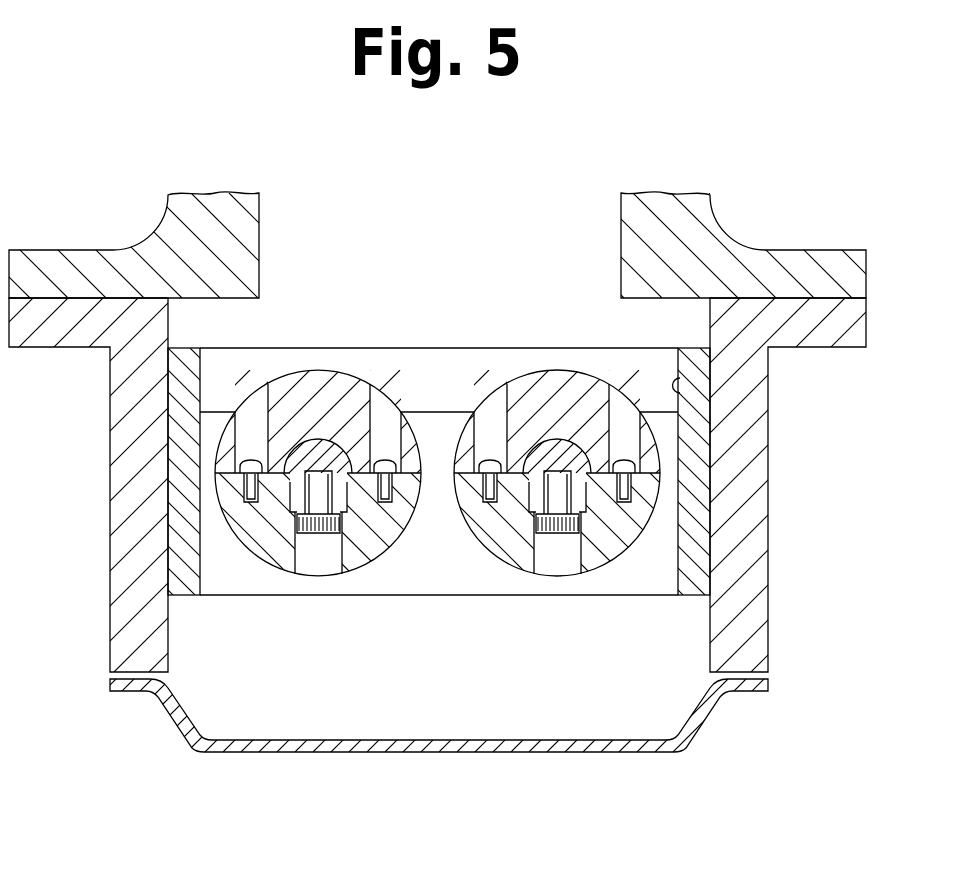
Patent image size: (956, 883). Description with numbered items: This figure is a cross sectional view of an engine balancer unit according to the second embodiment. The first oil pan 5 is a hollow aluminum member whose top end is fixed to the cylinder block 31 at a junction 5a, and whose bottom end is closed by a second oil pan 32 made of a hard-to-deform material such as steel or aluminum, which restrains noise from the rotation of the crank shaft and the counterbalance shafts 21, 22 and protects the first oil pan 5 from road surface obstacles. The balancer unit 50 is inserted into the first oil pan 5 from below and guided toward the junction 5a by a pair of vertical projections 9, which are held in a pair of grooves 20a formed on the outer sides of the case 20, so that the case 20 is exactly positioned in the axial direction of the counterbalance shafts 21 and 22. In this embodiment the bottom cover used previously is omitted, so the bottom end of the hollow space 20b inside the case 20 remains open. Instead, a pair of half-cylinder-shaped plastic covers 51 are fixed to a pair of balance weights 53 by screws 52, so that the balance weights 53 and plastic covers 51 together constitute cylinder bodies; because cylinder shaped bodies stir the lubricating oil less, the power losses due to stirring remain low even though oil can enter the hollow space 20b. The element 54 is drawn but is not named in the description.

The first oil pan 5 is at (827, 333).
The junction 5a is at (82, 296).
The vertical projections 9 is at (177, 490).
The case 20 is at (698, 568).
The grooves 20a is at (138, 437).
The hollow space 20b is at (680, 388).
The counterbalance shaft 21 is at (316, 440).
The counterbalance shaft 22 is at (564, 440).
The cylinder block 31 is at (652, 222).
The second oil pan 32 is at (700, 742).
The balancer unit 50 is at (460, 596).
The half-cylinder-shaped plastic covers 51 is at (345, 398).
The screws 52 is at (252, 504).
The balance weights 53 is at (235, 515).
The connector element 54 is at (318, 540).